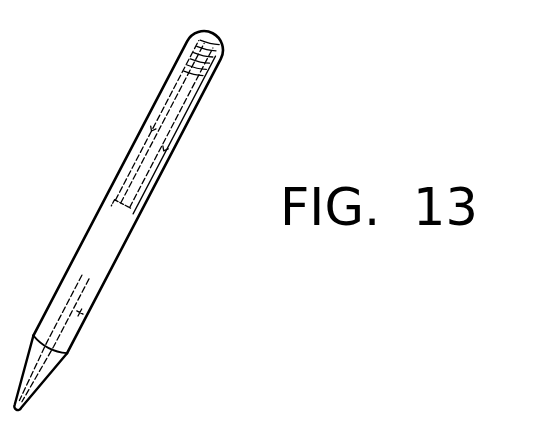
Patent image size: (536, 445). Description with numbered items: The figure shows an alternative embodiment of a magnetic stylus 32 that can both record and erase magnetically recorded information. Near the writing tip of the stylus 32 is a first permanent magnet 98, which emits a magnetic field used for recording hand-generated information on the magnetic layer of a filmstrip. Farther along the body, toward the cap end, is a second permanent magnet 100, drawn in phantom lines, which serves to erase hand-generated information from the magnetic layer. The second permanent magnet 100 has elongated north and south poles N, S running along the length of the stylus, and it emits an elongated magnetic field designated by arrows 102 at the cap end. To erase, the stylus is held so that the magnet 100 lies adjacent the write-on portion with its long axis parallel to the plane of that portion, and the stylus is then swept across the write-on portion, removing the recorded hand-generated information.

The stylus 32 is at (124, 271).
The first permanent magnet 98 is at (82, 314).
The second permanent magnet 100 is at (147, 199).
The arrows 102 is at (178, 72).
The north pole N is at (148, 125).
The south pole S is at (172, 153).